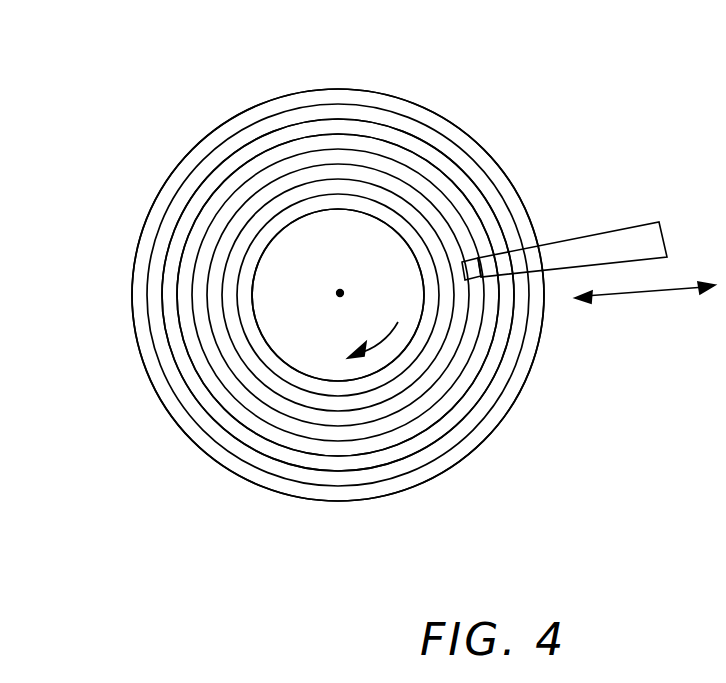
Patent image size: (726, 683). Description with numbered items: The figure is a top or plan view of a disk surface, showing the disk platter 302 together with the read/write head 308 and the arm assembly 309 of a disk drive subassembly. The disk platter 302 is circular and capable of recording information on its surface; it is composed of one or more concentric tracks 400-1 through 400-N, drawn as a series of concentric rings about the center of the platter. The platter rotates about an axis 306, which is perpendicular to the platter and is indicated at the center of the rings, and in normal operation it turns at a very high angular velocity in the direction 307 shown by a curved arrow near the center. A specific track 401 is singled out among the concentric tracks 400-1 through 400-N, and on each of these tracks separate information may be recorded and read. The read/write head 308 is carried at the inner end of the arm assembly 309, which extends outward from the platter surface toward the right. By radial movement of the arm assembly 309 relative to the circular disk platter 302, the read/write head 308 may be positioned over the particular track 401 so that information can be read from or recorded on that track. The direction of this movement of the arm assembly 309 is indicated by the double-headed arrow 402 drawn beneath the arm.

The disk platter 302 is at (238, 112).
The first concentric track 400-1 is at (436, 110).
The Nth concentric track 400-N is at (397, 223).
The specific track 401 is at (463, 187).
The axis 306 is at (340, 293).
The direction of rotation 307 is at (388, 338).
The read/write head 308 is at (468, 260).
The arm assembly 309 is at (605, 233).
The arrow indicating direction of arm movement 402 is at (650, 293).